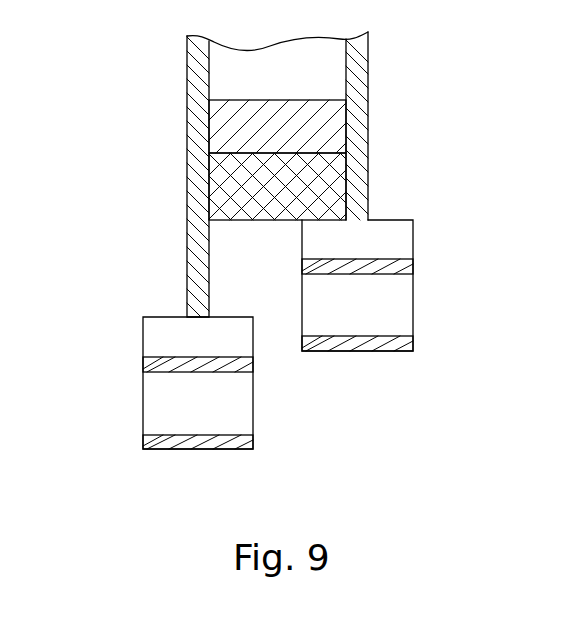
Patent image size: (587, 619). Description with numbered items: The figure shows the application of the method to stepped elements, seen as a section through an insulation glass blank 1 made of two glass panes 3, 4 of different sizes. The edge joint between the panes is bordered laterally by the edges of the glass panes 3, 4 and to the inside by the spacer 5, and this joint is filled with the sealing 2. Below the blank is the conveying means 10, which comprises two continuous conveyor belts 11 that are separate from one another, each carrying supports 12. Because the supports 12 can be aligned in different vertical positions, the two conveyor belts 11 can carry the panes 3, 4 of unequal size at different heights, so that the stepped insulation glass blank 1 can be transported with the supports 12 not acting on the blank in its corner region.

The insulation glass blank 1 is at (93, 87).
The sealing 2 is at (237, 176).
The glass pane 3 is at (202, 67).
The glass pane 4 is at (357, 71).
The spacer 5 is at (315, 138).
The conveying means 10 is at (298, 388).
The conveyor belt 11 is at (392, 267).
The support 12 is at (385, 243).